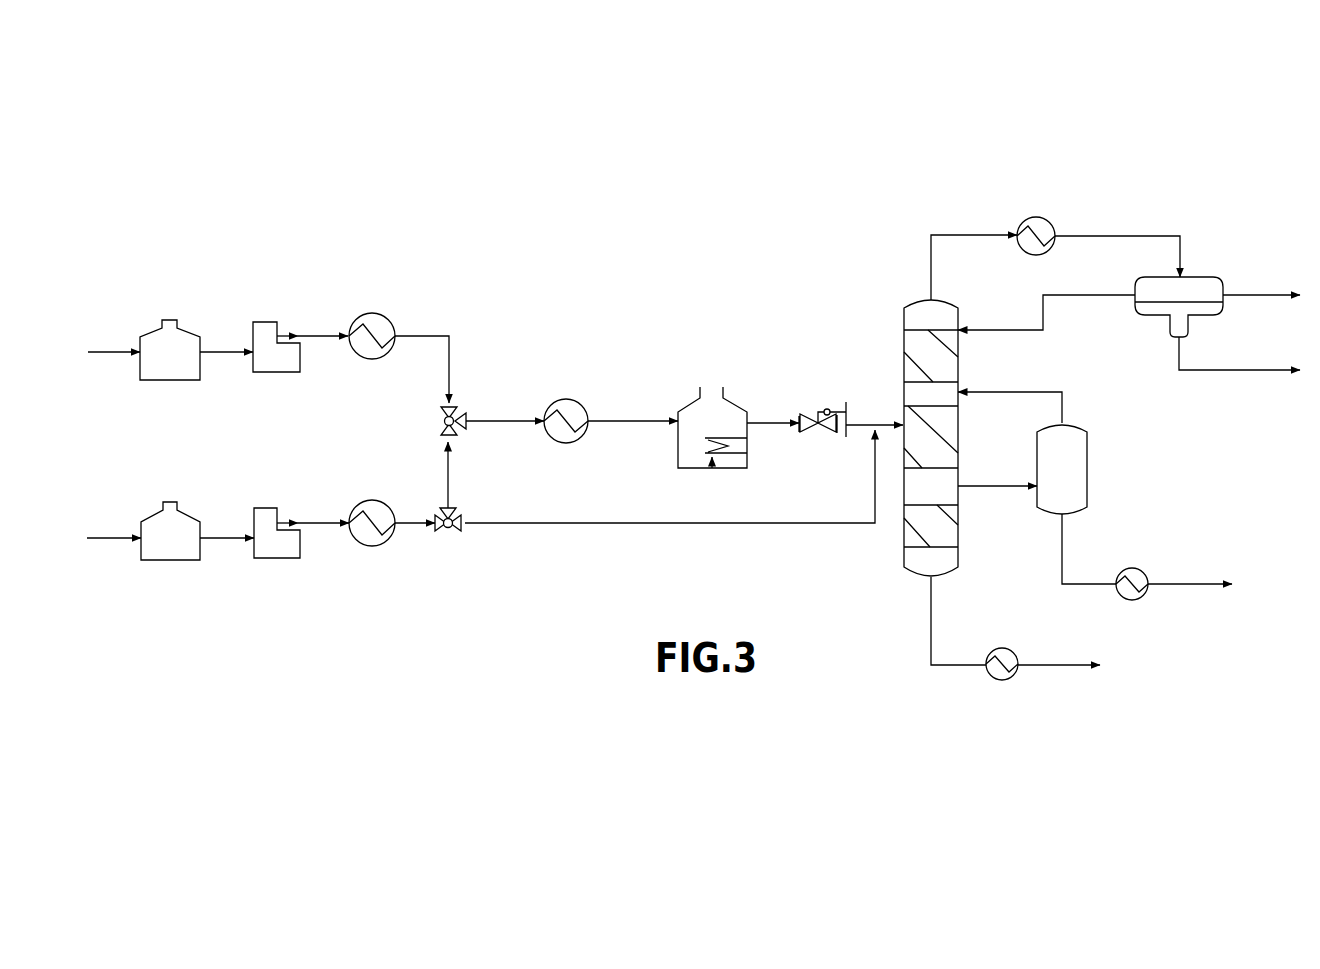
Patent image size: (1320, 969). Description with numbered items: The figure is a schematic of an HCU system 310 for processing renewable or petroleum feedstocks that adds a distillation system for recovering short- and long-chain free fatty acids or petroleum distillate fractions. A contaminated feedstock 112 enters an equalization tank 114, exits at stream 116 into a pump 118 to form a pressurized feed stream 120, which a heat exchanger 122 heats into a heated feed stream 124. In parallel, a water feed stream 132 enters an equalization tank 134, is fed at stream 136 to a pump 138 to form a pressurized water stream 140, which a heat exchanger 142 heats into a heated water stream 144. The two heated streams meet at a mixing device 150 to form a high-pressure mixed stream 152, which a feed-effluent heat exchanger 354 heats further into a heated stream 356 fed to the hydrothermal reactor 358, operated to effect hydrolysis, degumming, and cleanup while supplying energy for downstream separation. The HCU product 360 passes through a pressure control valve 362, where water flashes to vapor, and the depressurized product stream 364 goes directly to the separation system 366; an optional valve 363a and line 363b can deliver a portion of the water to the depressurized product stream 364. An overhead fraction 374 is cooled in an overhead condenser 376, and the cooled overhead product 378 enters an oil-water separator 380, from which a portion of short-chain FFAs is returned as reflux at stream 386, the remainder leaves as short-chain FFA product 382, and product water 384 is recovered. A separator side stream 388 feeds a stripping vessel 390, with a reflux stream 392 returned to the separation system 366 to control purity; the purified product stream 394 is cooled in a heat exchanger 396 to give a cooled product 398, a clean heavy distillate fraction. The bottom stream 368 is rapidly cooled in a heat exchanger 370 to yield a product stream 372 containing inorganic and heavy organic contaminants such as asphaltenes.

The HCU system 310 is at (193, 266).
The contaminated feedstock 112 is at (114, 338).
The equalization tank 114 is at (170, 350).
The equalization tank outlet stream 116 is at (226, 334).
The pump 118 is at (276, 347).
The pressurized feed stream 120 is at (312, 321).
The heat exchanger 122 is at (372, 349).
The heated feed stream 124 is at (444, 369).
The mixing device 150 is at (431, 422).
The high-pressure mixed stream 152 is at (505, 407).
The feed-effluent heat exchanger 354 is at (566, 437).
The heated stream 356 is at (633, 407).
The hydrothermal reactor 358 is at (712, 427).
The HCU product 360 is at (773, 408).
The pressure control valve 362 is at (822, 434).
The depressurized product stream 364 is at (874, 409).
The valve 363a is at (436, 534).
The line 363b is at (670, 477).
The water feed stream 132 is at (114, 555).
The equalization tank 134 is at (170, 531).
The equalization tank outlet stream 136 is at (227, 555).
The pump 138 is at (277, 534).
The pressurized water stream 140 is at (313, 510).
The heat exchanger 142 is at (372, 539).
The heated water stream 144 is at (470, 475).
The separation system 366 is at (931, 438).
The bottom stream 368 is at (939, 621).
The heat exchanger 370 is at (1003, 676).
The product stream 372 is at (1059, 652).
The overhead fraction 374 is at (952, 267).
The overhead condenser 376 is at (1036, 223).
The cooled overhead product 378 is at (1117, 243).
The oil-water separator 380 is at (1179, 306).
The short-chain FFA product 382 is at (1261, 279).
The product water 384 is at (1239, 355).
The reflux return stream 386 is at (1046, 313).
The separator side stream 388 is at (997, 471).
The stripping vessel 390 is at (1062, 469).
The reflux stream 392 is at (1010, 393).
The purified product stream 394 is at (1089, 550).
The heat exchanger 396 is at (1131, 598).
The cooled product 398 is at (1190, 570).